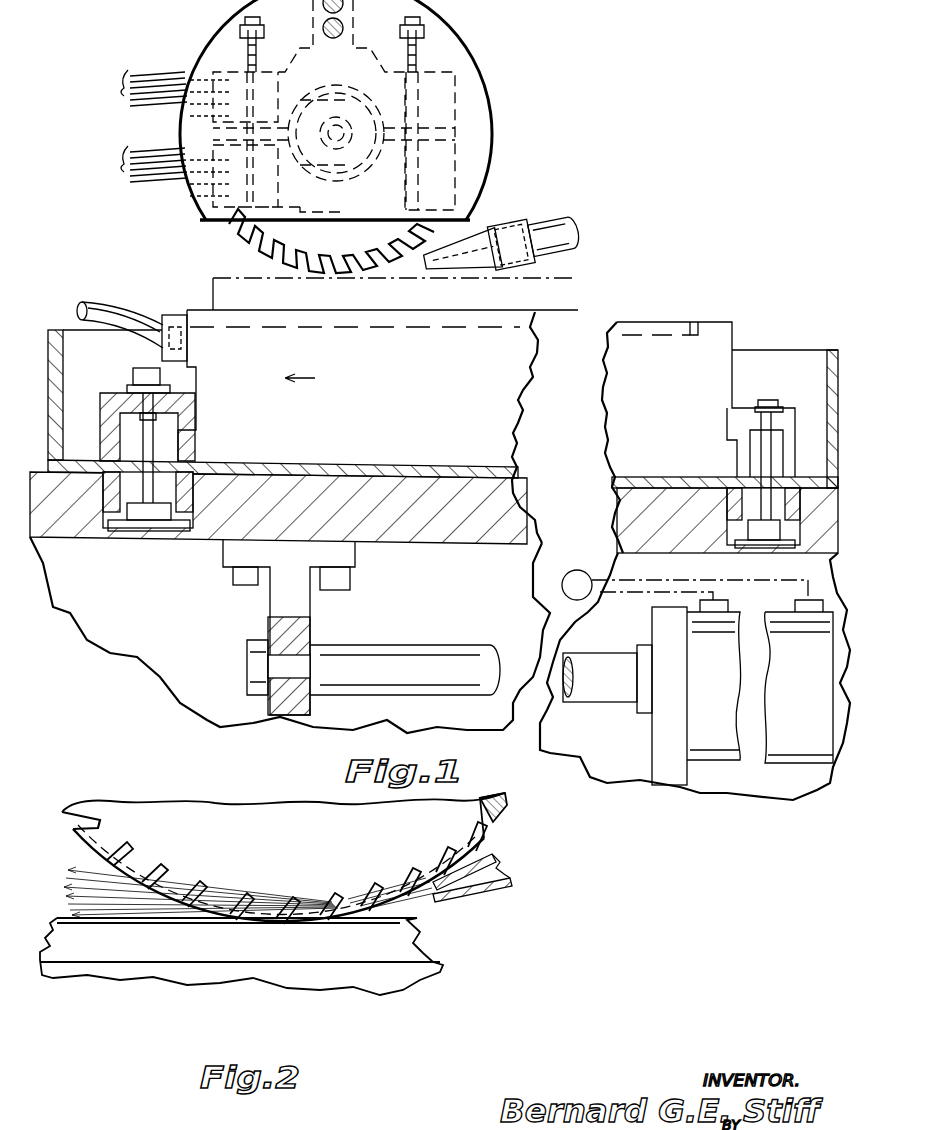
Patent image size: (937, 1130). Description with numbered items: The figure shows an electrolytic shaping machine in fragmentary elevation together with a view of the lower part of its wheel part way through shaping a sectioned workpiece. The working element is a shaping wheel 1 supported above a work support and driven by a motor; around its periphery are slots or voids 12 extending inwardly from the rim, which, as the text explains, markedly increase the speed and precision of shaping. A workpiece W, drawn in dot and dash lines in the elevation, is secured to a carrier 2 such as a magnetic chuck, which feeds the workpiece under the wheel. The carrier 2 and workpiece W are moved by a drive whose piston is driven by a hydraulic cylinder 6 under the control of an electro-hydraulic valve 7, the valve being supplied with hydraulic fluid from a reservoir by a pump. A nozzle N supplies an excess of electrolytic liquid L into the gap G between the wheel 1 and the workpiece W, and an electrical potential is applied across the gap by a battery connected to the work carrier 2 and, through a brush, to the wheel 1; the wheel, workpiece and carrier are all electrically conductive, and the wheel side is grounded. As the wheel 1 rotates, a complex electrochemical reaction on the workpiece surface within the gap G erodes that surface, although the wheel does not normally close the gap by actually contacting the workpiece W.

In FIG. 1, the shaping wheel 1 is at (475, 223).
In FIG. 2, the shaping wheel 1 is at (188, 818).
In FIG. 1, the slots or voids 12 is at (238, 237).
In FIG. 2, the slots or voids 12 is at (198, 890).
In FIG. 1, the nozzle N is at (502, 233).
In FIG. 2, the nozzle N is at (490, 855).
In FIG. 1, the workpiece W is at (562, 297).
In FIG. 2, the workpiece W is at (412, 950).
In FIG. 1, the carrier 2 is at (92, 538).
In FIG. 2, the carrier 2 is at (382, 982).
In FIG. 1, the electro-hydraulic valve 7 is at (576, 570).
In FIG. 1, the hydraulic cylinder 6 is at (793, 770).
In FIG. 2, the electrolytic liquid L is at (82, 872).
In FIG. 2, the gap G is at (258, 925).